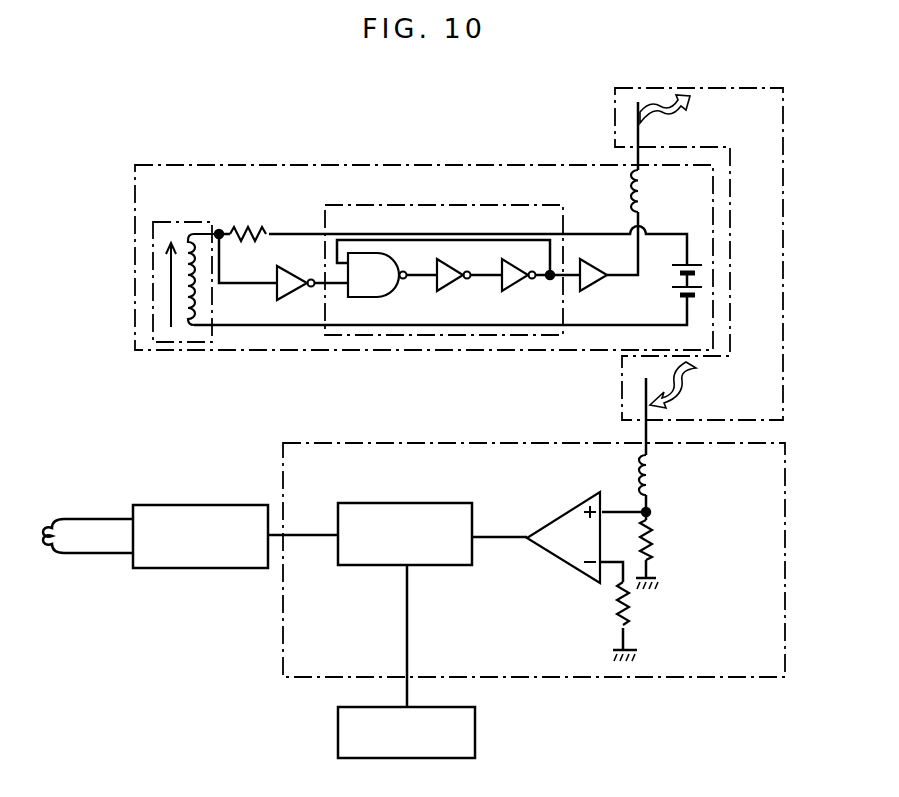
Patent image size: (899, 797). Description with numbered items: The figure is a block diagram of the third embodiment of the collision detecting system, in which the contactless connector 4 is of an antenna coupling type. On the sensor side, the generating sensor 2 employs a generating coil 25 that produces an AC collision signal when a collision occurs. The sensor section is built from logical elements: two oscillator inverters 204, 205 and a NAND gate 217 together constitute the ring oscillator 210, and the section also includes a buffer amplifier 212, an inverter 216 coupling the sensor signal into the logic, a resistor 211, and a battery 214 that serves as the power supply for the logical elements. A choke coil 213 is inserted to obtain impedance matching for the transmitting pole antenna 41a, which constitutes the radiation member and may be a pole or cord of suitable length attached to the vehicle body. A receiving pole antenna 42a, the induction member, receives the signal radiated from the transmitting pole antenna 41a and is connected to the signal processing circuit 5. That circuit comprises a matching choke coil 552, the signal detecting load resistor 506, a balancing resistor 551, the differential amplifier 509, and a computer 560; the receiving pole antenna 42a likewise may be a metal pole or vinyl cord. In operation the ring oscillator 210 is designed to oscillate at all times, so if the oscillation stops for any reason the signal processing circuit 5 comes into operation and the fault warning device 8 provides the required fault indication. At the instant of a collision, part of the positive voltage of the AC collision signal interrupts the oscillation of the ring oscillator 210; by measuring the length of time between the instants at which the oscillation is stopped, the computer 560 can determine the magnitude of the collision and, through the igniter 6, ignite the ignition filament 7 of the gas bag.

The generating sensor 2 is at (168, 342).
The contactless connector 4 is at (703, 88).
The signal processing circuit 5 is at (786, 505).
The igniter 6 is at (215, 505).
The ignition filament 7 is at (48, 532).
The fault warning device 8 is at (477, 725).
The generating coil 25 is at (186, 238).
The transmitting pole antenna 41a is at (637, 138).
The receiving pole antenna 42a is at (646, 398).
The oscillator inverter 204 is at (520, 291).
The oscillator inverter 205 is at (455, 291).
The ring oscillator 210 is at (455, 205).
The resistor 211 is at (252, 230).
The buffer amplifier 212 is at (598, 291).
The choke coil 213 is at (646, 195).
The battery 214 is at (702, 273).
The inverter 216 is at (280, 298).
The NAND gate 217 is at (372, 297).
The signal detecting load resistor 506 is at (654, 547).
The differential amplifier 509 is at (546, 530).
The balancing resistor 551 is at (632, 606).
The matching choke coil 552 is at (652, 478).
The computer 560 is at (402, 503).